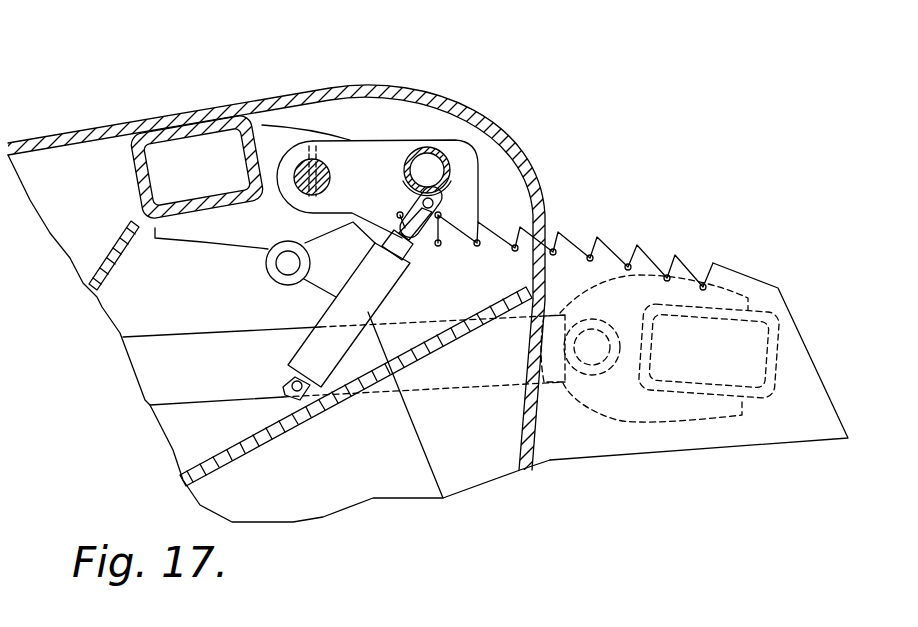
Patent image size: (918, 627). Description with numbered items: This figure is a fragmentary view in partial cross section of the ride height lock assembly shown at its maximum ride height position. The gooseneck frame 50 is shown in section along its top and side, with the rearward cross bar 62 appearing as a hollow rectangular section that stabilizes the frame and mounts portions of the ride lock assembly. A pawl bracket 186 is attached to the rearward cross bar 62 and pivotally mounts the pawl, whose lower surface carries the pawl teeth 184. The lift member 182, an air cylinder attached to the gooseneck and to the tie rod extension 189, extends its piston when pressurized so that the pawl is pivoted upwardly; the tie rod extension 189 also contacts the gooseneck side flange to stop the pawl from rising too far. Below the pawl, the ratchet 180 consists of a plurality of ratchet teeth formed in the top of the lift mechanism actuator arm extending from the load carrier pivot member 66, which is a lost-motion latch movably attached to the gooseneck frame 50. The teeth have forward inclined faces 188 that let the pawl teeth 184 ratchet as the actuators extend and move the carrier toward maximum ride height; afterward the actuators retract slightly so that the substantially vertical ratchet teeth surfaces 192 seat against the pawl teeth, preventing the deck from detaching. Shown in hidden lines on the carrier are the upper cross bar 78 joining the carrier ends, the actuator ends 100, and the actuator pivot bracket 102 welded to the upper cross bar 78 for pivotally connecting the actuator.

The gooseneck frame 50 is at (97, 142).
The rearward cross bar 62 is at (157, 147).
The pawl brackets 186 is at (278, 133).
The pawl teeth 184 is at (463, 200).
The tie rod extension 189 is at (445, 157).
The lift member 182 is at (337, 315).
The forward inclined faces 188 is at (615, 252).
The ratchet teeth vertical surfaces 192 is at (592, 250).
The ratchets 180 is at (727, 244).
The upper cross bar 78 is at (735, 320).
The load carrier pivot member 66 is at (797, 381).
The actuator ends 100 is at (545, 377).
The actuator pivot brackets 102 is at (648, 412).